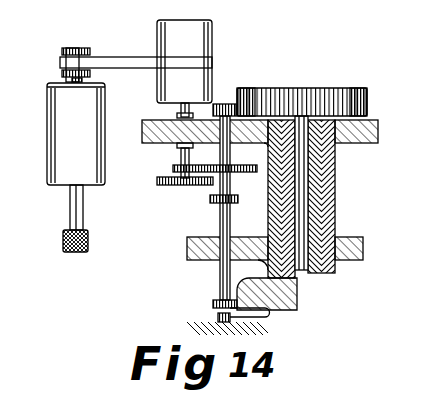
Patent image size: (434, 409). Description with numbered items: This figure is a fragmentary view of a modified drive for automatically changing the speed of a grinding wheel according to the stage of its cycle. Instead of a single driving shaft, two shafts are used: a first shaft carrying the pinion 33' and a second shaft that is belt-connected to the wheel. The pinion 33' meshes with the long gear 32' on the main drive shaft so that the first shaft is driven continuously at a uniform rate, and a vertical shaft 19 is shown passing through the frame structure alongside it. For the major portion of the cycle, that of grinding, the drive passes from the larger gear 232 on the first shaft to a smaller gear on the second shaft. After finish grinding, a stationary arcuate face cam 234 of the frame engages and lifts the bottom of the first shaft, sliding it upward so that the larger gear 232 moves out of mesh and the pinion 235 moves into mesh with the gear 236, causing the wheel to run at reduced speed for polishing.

The shaft 19 is at (300, 184).
The long gear 32' is at (302, 90).
The pinion 33' is at (233, 88).
The larger gear 232 is at (234, 166).
The stationary arcuate face cam 234 is at (218, 317).
The pinion 235 is at (239, 202).
The gear 236 is at (165, 186).